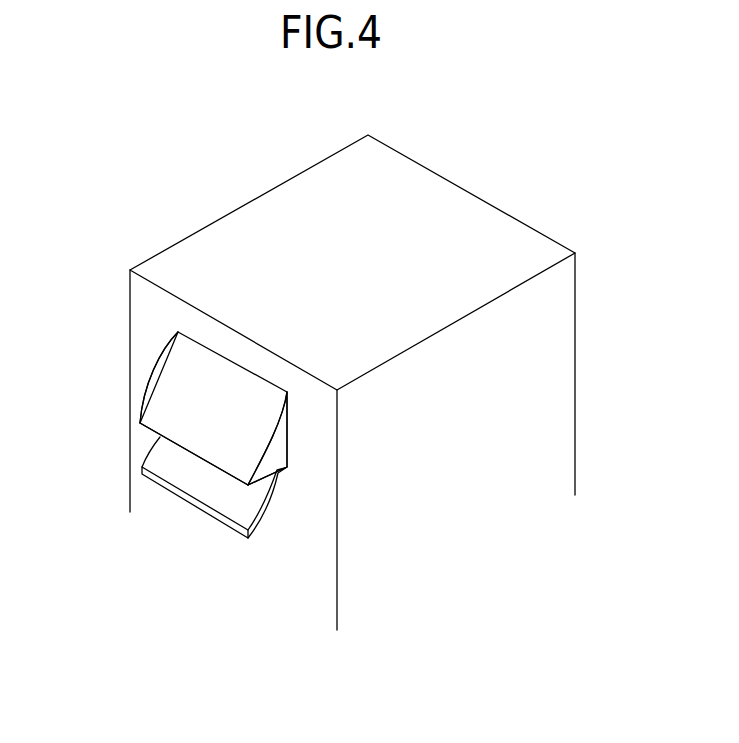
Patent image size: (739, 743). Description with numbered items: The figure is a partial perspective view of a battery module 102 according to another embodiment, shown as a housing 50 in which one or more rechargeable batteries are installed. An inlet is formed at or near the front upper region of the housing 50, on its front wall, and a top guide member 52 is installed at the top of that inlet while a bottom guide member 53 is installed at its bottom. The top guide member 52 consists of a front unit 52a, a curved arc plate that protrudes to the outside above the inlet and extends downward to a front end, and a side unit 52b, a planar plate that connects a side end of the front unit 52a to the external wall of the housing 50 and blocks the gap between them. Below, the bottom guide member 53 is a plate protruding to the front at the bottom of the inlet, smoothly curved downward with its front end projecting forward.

The battery module 102 is at (250, 182).
The housing 50 is at (436, 200).
The top guide member 52 is at (158, 360).
The front unit 52a is at (158, 392).
The side unit 52b is at (277, 447).
The bottom guide member 53 is at (200, 487).